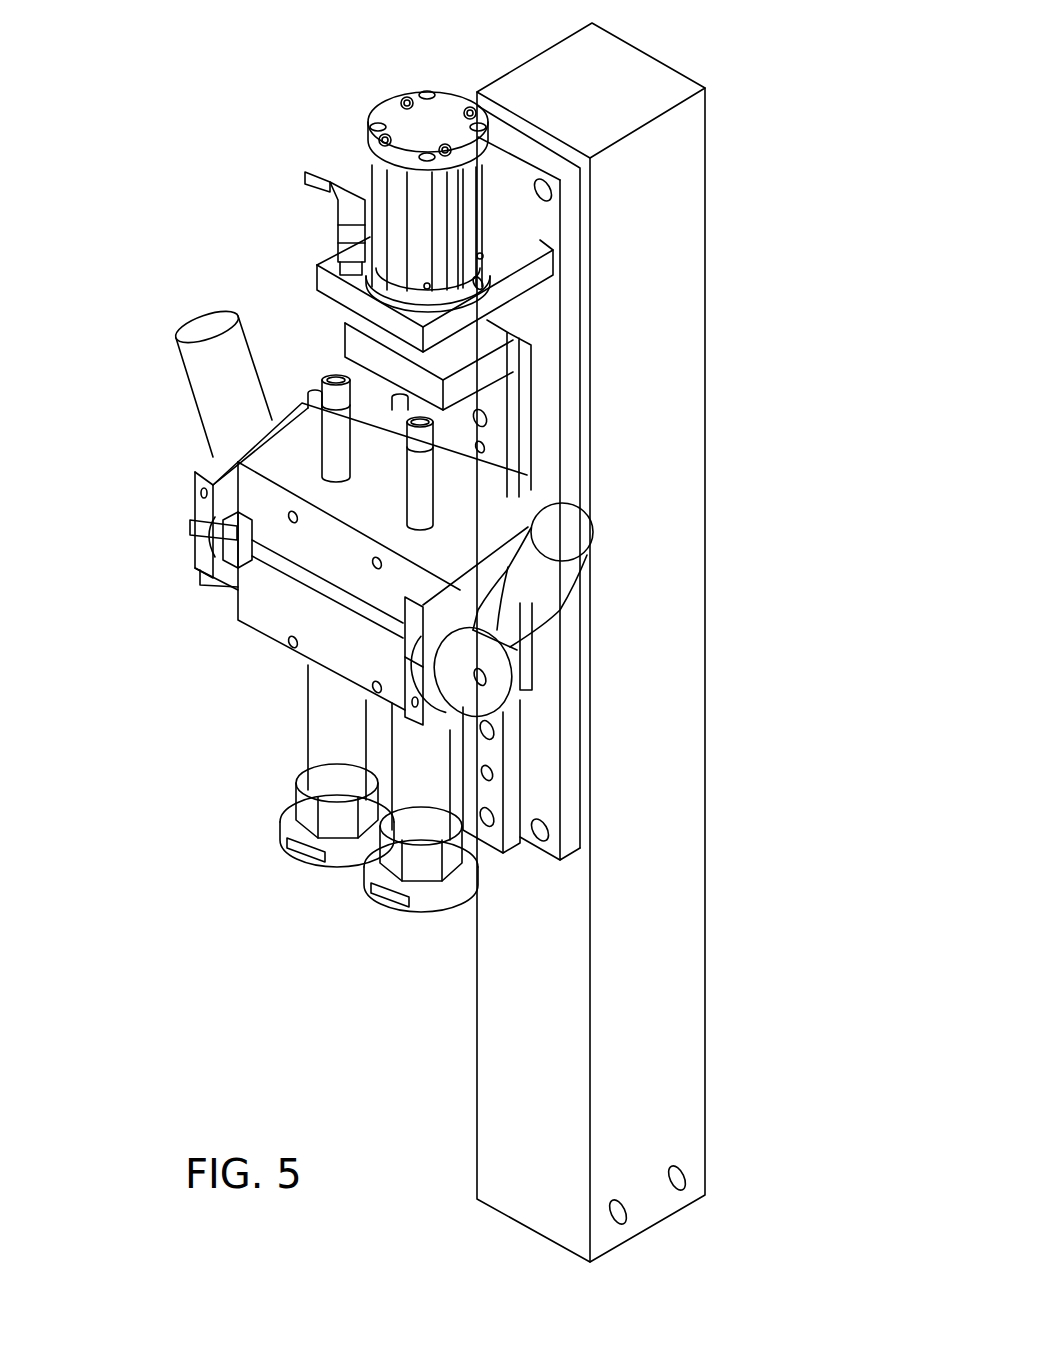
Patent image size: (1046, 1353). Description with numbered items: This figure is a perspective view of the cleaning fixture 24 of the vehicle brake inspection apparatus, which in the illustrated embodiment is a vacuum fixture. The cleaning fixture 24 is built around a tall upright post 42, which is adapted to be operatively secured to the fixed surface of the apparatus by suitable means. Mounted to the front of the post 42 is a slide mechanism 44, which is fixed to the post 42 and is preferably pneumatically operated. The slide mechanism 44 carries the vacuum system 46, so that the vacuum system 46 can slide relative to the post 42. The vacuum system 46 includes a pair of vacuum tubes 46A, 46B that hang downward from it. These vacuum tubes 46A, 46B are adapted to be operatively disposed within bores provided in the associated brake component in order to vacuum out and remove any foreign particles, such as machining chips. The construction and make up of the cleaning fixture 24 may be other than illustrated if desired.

The cleaning fixture 24 is at (326, 544).
The post 42 is at (692, 908).
The slide mechanism 44 is at (545, 415).
The vacuum system 46 is at (272, 675).
The vacuum tube 46A is at (330, 862).
The vacuum tube 46B is at (420, 910).